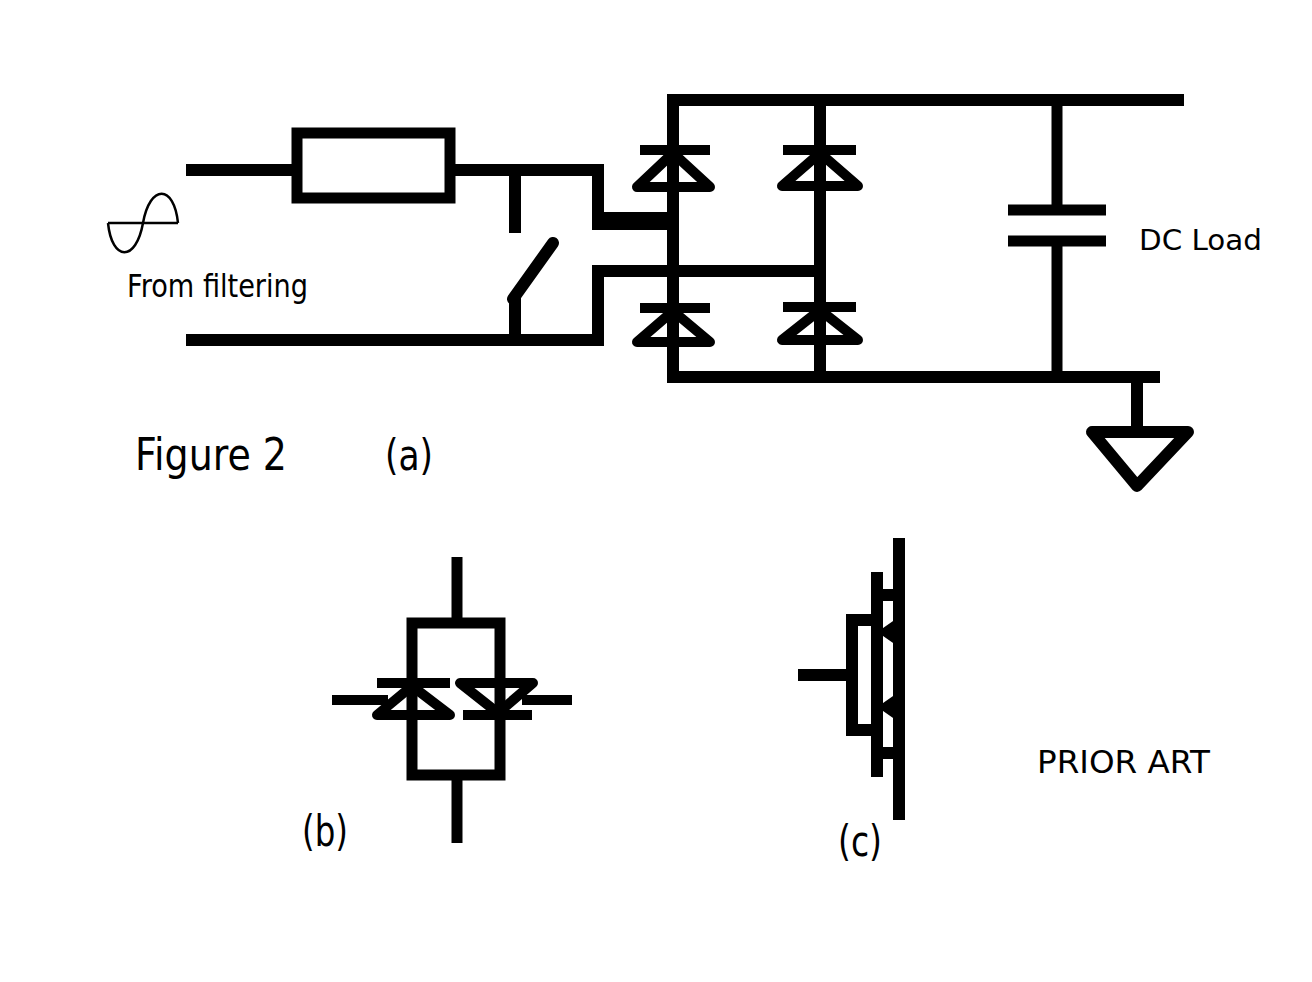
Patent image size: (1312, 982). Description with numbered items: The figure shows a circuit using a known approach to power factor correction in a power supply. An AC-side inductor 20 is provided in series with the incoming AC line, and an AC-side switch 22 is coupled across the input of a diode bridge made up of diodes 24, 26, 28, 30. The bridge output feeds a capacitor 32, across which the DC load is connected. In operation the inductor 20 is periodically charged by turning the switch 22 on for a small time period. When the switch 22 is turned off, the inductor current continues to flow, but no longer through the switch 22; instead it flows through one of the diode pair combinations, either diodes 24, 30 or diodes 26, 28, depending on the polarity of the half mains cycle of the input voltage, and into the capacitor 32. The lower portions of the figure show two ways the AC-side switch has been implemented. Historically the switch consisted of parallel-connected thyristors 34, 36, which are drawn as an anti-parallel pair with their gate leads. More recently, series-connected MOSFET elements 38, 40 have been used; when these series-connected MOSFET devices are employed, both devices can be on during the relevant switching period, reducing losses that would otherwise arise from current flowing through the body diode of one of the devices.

The AC-side inductor 20 is at (428, 157).
The AC-side switch 22 is at (523, 272).
The diode 24 is at (648, 173).
The diode 26 is at (783, 177).
The diode 28 is at (641, 372).
The diode 30 is at (772, 342).
The capacitor 32 is at (1000, 222).
The thyristor 34 is at (410, 655).
The thyristor 36 is at (564, 713).
The MOSFET element 38 is at (890, 612).
The MOSFET element 40 is at (890, 725).